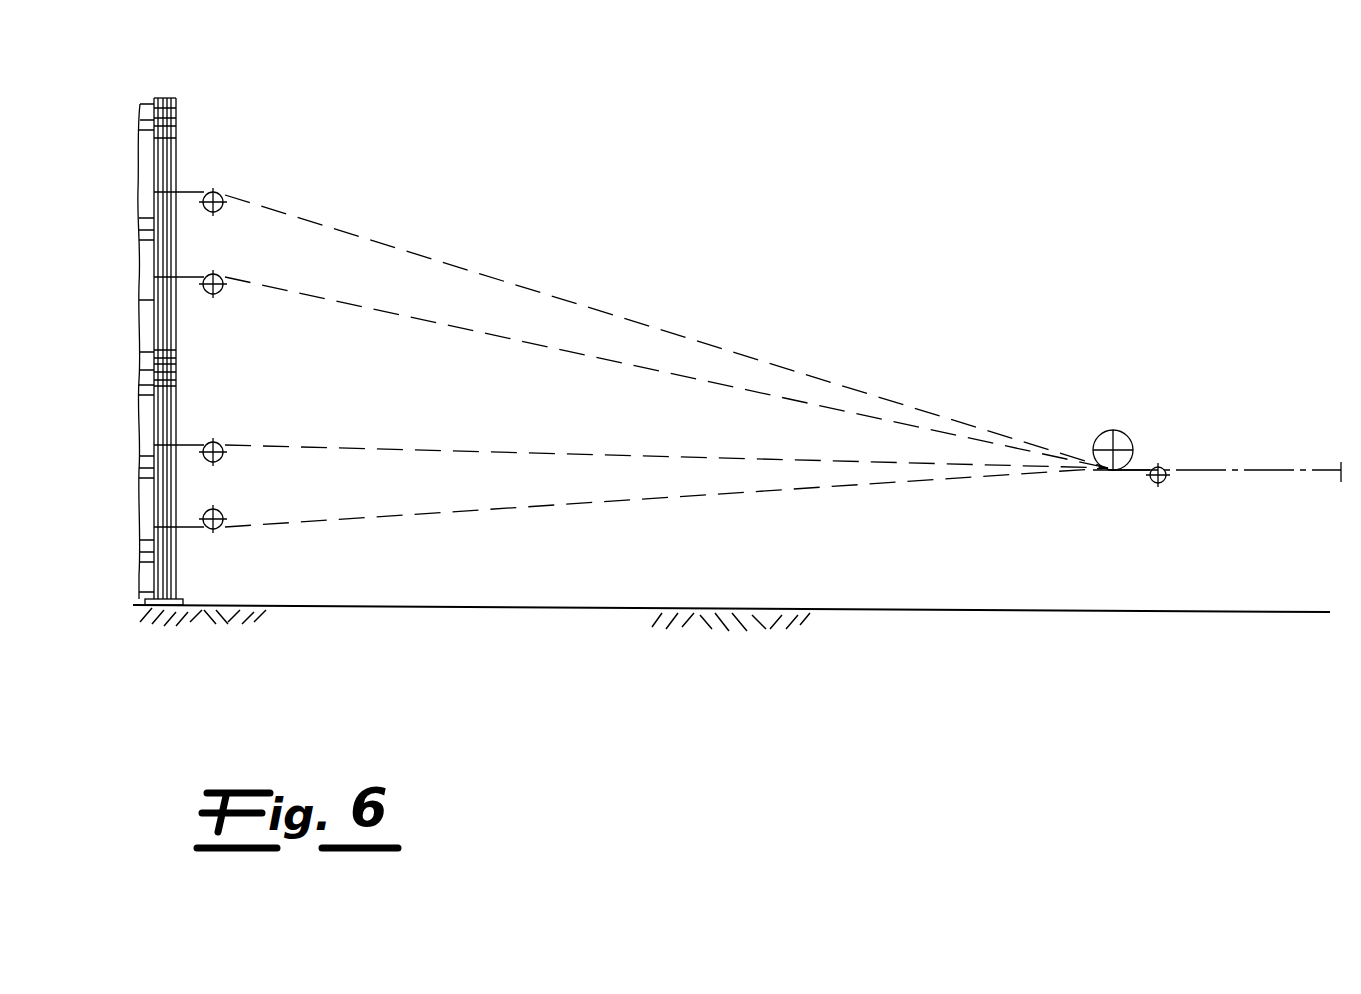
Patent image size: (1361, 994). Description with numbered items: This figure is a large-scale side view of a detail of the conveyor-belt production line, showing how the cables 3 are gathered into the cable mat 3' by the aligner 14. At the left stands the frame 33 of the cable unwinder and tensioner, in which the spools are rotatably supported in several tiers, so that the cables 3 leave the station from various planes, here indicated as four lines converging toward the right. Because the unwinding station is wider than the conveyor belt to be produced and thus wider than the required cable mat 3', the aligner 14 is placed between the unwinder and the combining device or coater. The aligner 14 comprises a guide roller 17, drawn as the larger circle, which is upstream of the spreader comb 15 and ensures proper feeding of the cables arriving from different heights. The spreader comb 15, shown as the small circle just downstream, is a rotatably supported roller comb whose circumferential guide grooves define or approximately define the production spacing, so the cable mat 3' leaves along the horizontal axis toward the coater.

The frame 33 is at (163, 98).
The cables 3 is at (642, 360).
The cable mat 3' is at (1224, 438).
The aligner 14 is at (1143, 387).
The guide roller 17 is at (1100, 436).
The spreader comb 15 is at (1163, 484).